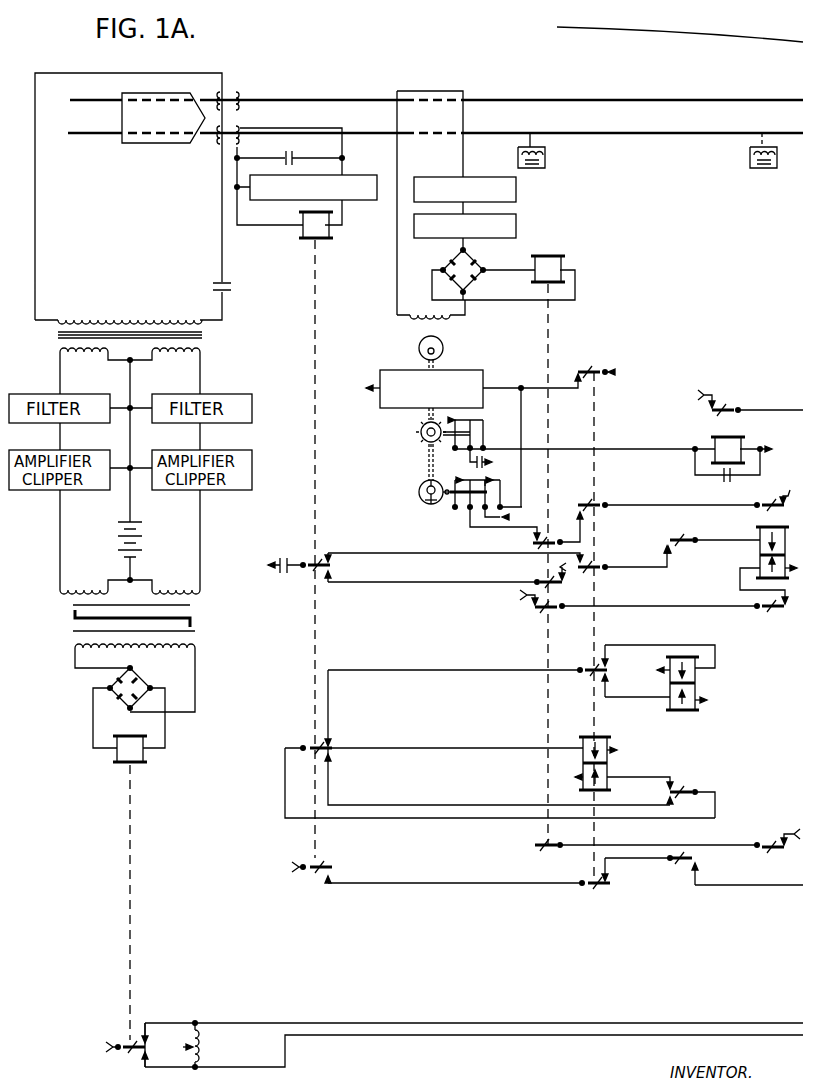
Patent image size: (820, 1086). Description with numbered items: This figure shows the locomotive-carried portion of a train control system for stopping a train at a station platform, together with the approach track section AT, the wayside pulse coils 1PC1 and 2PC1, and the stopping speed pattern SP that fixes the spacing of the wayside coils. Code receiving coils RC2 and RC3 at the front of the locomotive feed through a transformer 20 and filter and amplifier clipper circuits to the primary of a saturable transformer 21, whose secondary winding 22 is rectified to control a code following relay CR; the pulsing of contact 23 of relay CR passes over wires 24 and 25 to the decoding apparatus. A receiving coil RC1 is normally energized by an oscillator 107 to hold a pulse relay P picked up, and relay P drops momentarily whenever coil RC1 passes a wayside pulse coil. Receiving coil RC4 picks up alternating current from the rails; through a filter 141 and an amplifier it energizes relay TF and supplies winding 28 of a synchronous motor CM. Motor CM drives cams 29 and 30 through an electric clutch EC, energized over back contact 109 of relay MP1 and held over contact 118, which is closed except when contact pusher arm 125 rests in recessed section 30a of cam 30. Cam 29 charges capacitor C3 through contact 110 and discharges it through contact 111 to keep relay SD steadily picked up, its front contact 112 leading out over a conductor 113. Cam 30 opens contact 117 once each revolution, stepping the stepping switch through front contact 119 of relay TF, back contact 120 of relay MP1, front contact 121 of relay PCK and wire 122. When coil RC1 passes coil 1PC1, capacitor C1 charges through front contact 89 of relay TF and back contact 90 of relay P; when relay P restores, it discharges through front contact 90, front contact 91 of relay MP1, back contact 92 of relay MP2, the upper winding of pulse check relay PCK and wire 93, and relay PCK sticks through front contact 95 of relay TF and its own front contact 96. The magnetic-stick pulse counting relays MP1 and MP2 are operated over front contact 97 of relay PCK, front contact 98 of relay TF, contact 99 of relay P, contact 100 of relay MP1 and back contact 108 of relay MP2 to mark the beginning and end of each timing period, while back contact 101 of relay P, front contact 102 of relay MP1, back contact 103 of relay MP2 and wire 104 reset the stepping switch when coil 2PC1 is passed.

The transformer 20 is at (108, 320).
The saturable transformer 21 is at (190, 596).
The secondary winding 22 is at (180, 648).
The code following relay CR is at (128, 746).
The receiving coil RC1 is at (240, 144).
The receiving coil RC2 is at (219, 144).
The receiving coil RC3 is at (218, 92).
The receiving coil RC4 is at (240, 92).
The oscillator 107 is at (365, 168).
The pulse relay P is at (300, 218).
The approach track section AT is at (494, 133).
The filter 141 is at (427, 177).
The pulse coil 1PC1 is at (545, 158).
The pulse coil 2PC1 is at (750, 158).
The stopping speed pattern SP is at (748, 38).
The relay TF is at (548, 256).
The winding 28 is at (431, 304).
The synchronous motor CM is at (443, 343).
The electric clutch EC is at (400, 370).
The cam 29 is at (421, 435).
The contact 110 is at (448, 419).
The contact 111 is at (486, 420).
The contact pusher arm 125 is at (468, 462).
The capacitor C3 is at (494, 478).
The cam 30 is at (419, 492).
The recessed section 30a is at (437, 501).
The contact 118 is at (502, 492).
The contact 117 is at (468, 520).
The front contact of relay TF 119 is at (558, 530).
The back contact of relay MP1 109 is at (602, 374).
The front contact of relay SD 112 is at (718, 408).
The conductor 113 is at (773, 407).
The relay SD is at (745, 451).
The wire 122 is at (784, 487).
The back contact of relay MP1 120 is at (598, 505).
The front contact of relay PCK 121 is at (771, 505).
The back contact of relay MP2 92 is at (680, 535).
The pulse check relay PCK is at (760, 536).
The wire 93 is at (781, 545).
The front contact of relay MP1 91 is at (599, 567).
The front contact of relay TF 89 is at (560, 585).
The front contact of relay TF 95 is at (545, 610).
The front contact of relay PCK 96 is at (766, 611).
The capacitor C1 is at (283, 558).
The contact of relay P 90 is at (312, 569).
The contact of relay P 99 is at (311, 748).
The contact of relay MP1 100 is at (593, 668).
The magnetic-stick pulse counting relay MP2 is at (695, 677).
The magnetic-stick pulse counting relay MP1 is at (607, 761).
The back contact of relay MP2 108 is at (683, 792).
The front contact of relay TF 98 is at (540, 848).
The front contact of relay PCK 97 is at (768, 851).
The back contact of relay P 101 is at (315, 871).
The front contact of relay MP1 102 is at (596, 886).
The back contact of relay MP2 103 is at (684, 863).
The wire 104 is at (790, 886).
The contact 23 is at (128, 1050).
The wire 24 is at (781, 1023).
The wire 25 is at (781, 1035).